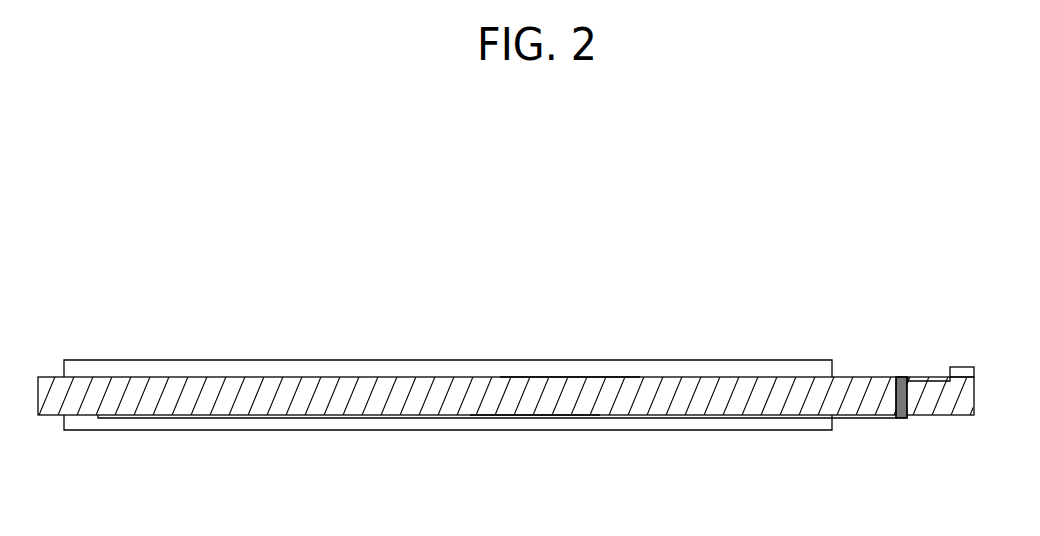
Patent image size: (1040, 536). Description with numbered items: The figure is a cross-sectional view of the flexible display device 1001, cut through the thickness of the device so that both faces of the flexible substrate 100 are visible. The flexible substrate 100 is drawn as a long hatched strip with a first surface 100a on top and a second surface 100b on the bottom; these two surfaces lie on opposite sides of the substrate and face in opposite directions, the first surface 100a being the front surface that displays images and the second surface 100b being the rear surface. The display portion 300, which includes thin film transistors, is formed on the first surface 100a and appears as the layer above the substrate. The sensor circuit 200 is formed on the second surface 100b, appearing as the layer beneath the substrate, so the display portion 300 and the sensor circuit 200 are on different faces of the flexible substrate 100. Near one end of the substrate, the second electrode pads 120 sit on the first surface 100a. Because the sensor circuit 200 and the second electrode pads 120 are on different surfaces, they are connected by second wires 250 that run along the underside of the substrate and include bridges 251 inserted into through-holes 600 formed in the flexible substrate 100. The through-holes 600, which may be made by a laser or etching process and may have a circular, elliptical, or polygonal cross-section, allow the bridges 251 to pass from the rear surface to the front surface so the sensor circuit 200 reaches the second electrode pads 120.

The flexible display device 1001 is at (470, 333).
The flexible substrate 100 is at (338, 385).
The first surface 100a is at (567, 378).
The second surface 100b is at (533, 416).
The second electrode pads 120 is at (960, 367).
The sensor circuit 200 is at (297, 423).
The second wires 250 is at (850, 420).
The bridges 251 is at (905, 400).
The display portion 300 is at (248, 370).
The through-holes 600 is at (890, 414).